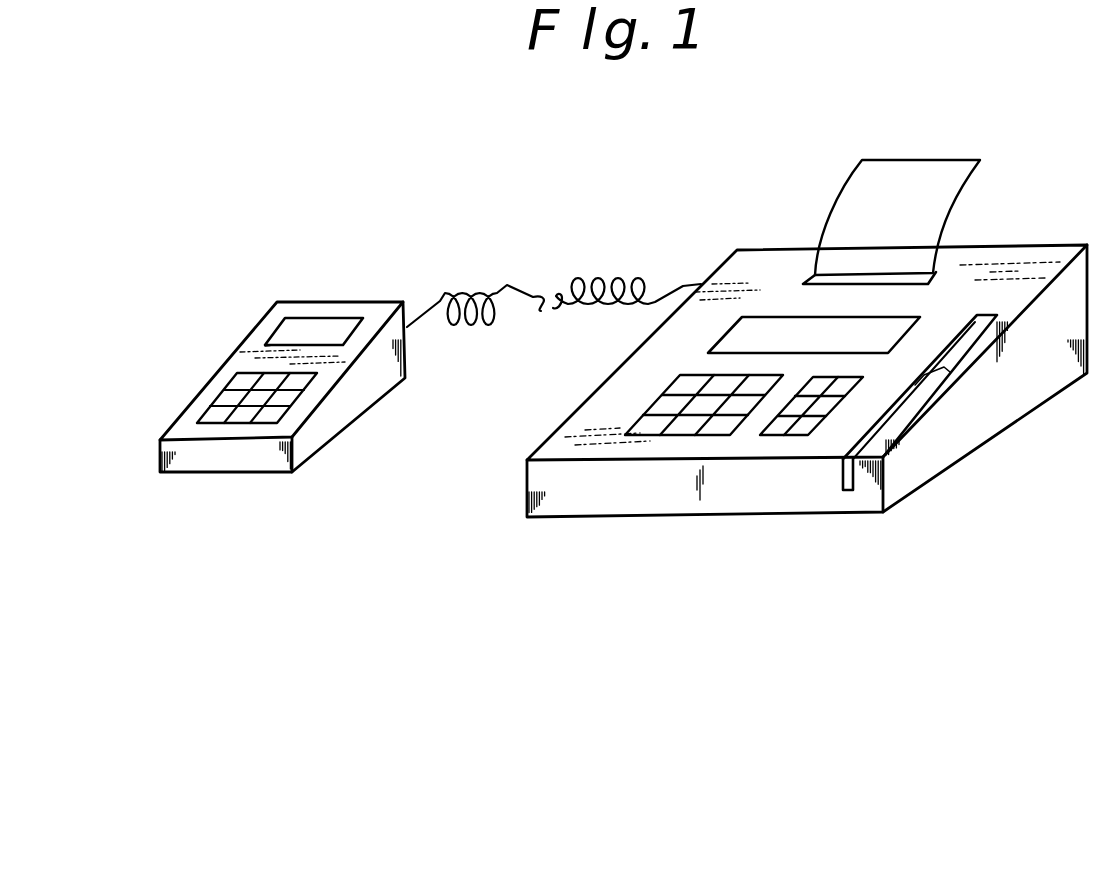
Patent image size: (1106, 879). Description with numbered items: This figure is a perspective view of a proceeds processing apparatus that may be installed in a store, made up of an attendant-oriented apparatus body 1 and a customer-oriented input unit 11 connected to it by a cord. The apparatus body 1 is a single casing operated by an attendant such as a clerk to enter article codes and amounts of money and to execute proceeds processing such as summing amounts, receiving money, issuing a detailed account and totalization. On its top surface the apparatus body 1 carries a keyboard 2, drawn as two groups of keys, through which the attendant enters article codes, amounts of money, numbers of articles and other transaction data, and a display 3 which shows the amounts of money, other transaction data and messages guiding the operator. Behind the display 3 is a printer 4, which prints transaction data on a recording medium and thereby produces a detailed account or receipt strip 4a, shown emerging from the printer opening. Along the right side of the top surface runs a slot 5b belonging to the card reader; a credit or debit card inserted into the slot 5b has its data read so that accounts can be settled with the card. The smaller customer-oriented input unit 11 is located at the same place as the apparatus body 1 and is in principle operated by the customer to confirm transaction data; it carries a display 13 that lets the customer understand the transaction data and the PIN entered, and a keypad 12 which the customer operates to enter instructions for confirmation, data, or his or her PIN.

The apparatus body 1 is at (983, 440).
The keyboard 2 is at (795, 428).
The display 3 is at (742, 330).
The printer 4 is at (900, 284).
The receipt strip 4a is at (915, 173).
The slot 5b is at (932, 370).
The customer-oriented input unit 11 is at (275, 473).
The keypad 12 is at (213, 415).
The display 13 is at (290, 318).